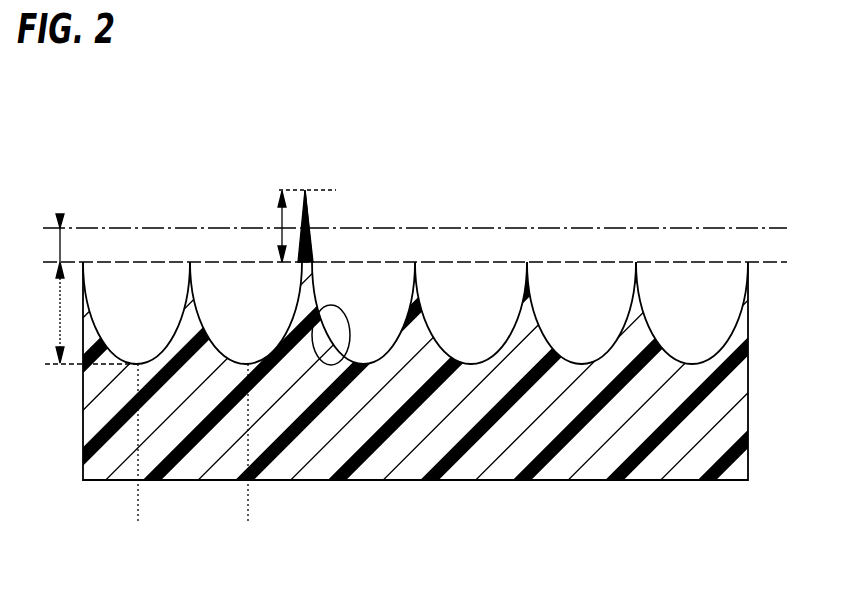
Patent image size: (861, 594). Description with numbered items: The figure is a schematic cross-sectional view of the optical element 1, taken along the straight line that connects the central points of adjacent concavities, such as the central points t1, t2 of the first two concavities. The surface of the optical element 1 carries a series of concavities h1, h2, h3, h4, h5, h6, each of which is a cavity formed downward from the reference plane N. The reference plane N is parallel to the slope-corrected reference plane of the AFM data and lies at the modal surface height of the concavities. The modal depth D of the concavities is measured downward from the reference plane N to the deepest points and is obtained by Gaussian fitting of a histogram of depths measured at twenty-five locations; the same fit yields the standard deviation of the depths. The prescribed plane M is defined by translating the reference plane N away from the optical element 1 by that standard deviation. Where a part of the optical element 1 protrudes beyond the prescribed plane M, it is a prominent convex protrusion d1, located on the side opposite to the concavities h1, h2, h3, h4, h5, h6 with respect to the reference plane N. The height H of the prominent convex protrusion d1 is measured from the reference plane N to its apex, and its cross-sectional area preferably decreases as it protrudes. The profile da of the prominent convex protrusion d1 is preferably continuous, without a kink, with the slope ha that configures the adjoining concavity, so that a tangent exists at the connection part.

The optical element 1 is at (634, 135).
The concavity h1 is at (145, 318).
The concavity h2 is at (254, 318).
The concavity h3 is at (375, 318).
The concavity h4 is at (482, 317).
The concavity h5 is at (590, 322).
The concavity h6 is at (707, 317).
The prominent convex protrusion d1 is at (305, 190).
The profile of the prominent convex protrusion da is at (311, 249).
The slope of the concavity ha is at (345, 368).
The central point of the concavity t1 is at (140, 461).
The central point of the concavity t2 is at (249, 461).
The height of the prominent convex protrusions H is at (296, 226).
The modal depth of the concavities D is at (90, 321).
The prescribed plane M is at (430, 229).
The reference plane N is at (430, 262).